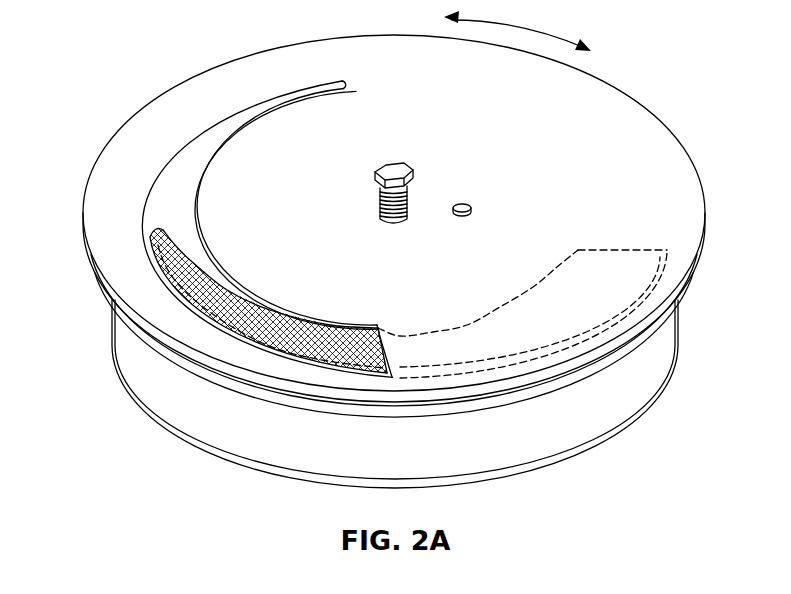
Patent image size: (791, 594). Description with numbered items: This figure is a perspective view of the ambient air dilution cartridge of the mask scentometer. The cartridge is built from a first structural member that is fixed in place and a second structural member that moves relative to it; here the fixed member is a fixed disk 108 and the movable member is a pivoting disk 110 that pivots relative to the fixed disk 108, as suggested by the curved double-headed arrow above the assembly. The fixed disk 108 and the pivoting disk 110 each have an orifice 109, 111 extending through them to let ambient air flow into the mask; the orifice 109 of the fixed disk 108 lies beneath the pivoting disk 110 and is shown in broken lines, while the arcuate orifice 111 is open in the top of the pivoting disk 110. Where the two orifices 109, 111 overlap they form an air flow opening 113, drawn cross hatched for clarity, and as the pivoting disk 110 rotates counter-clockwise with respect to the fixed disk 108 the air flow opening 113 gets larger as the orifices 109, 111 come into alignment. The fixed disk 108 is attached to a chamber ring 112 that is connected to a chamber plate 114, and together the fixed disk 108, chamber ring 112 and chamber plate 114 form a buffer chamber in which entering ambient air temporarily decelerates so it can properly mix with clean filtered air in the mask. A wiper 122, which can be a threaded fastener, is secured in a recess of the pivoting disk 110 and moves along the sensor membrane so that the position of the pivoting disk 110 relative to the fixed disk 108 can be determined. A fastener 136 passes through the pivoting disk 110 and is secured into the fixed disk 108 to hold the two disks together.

The fixed disk 108 is at (650, 332).
The orifice 109 is at (610, 248).
The pivoting disk 110 is at (628, 116).
The orifice 111 is at (185, 137).
The chamber ring 112 is at (118, 334).
The air flow opening 113 is at (190, 313).
The chamber plate 114 is at (600, 432).
The wiper 122 is at (464, 204).
The fastener 136 is at (388, 172).